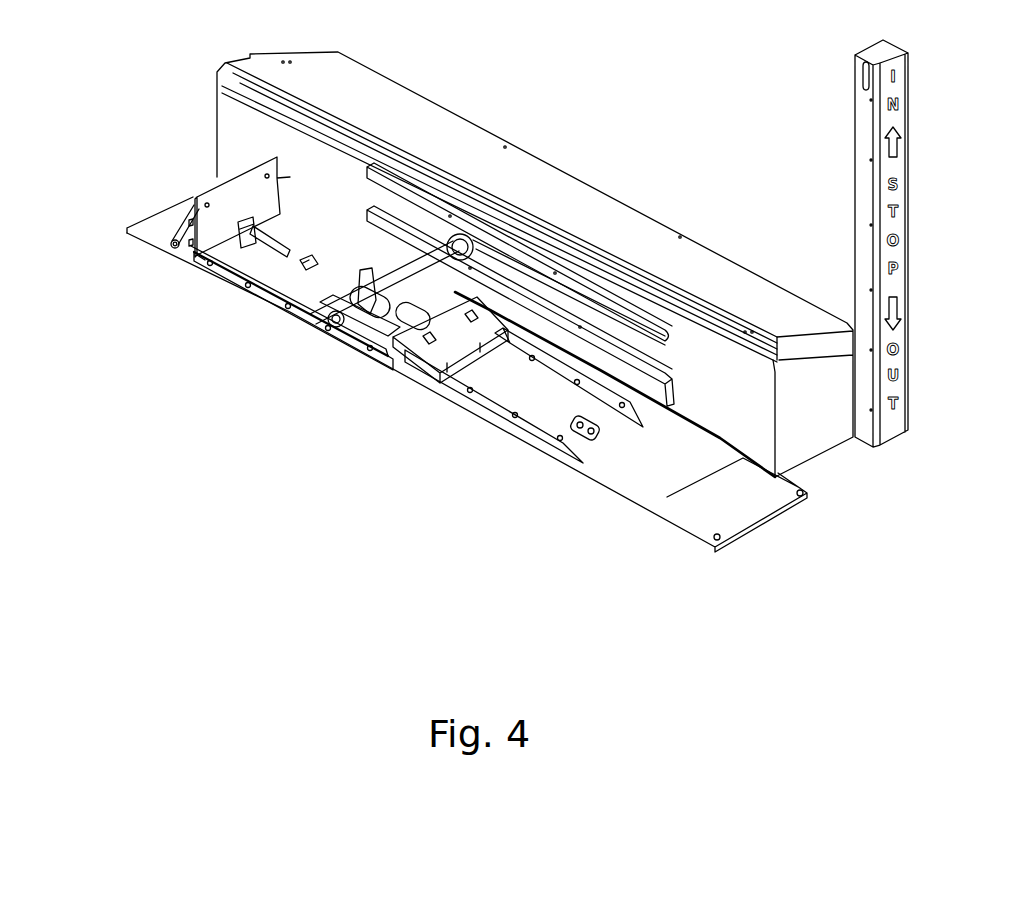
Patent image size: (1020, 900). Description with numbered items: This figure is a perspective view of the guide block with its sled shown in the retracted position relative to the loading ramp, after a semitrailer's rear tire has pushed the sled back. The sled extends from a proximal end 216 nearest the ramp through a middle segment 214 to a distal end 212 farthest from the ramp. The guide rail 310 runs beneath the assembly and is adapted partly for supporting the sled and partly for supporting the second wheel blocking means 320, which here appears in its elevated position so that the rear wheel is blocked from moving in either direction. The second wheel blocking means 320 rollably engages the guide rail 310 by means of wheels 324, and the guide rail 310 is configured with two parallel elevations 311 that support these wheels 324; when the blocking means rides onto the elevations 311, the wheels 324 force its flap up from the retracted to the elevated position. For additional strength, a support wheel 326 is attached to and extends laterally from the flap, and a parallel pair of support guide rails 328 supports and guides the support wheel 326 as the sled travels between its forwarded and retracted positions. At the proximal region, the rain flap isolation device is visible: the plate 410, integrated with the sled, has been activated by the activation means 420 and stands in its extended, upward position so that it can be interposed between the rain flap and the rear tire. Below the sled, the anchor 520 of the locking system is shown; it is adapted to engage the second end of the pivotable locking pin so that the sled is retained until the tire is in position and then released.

The distal end 212 is at (422, 345).
The middle segment 214 is at (276, 273).
The proximal end 216 is at (213, 237).
The guide rail 310 is at (660, 457).
The parallel elevations 311 is at (525, 427).
The second wheel blocking means 320 is at (328, 312).
The wheels 324 is at (428, 277).
The support wheel 326 is at (478, 242).
The support guide rails 328 is at (548, 270).
The plate 410 is at (222, 197).
The activation means 420 is at (270, 230).
The anchor 520 is at (585, 430).